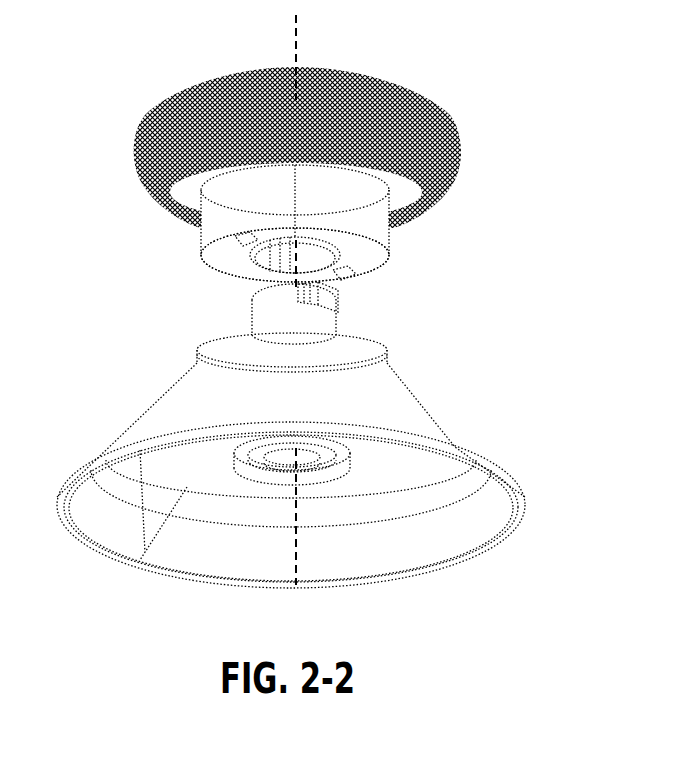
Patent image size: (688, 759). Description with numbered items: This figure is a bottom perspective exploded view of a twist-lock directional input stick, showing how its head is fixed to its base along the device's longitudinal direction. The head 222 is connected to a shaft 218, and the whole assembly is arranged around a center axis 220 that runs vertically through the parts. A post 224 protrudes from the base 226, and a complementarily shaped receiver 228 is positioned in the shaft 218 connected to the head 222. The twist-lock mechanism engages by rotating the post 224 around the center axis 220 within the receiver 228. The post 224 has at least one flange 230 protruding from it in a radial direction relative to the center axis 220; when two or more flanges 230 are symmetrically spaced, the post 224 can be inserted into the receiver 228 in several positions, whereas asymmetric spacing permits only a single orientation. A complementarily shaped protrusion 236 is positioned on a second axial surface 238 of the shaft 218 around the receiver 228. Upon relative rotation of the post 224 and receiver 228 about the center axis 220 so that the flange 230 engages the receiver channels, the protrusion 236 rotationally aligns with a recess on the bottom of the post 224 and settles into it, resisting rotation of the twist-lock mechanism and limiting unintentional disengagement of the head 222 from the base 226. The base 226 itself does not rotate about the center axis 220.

The shaft 218 is at (390, 231).
The center axis 220 is at (296, 544).
The head 222 is at (443, 110).
The post 224 is at (336, 333).
The base 226 is at (462, 418).
The receiver 228 is at (238, 281).
The flange 230 is at (332, 297).
The protrusion 236 is at (250, 243).
The second axial surface 238 is at (277, 232).